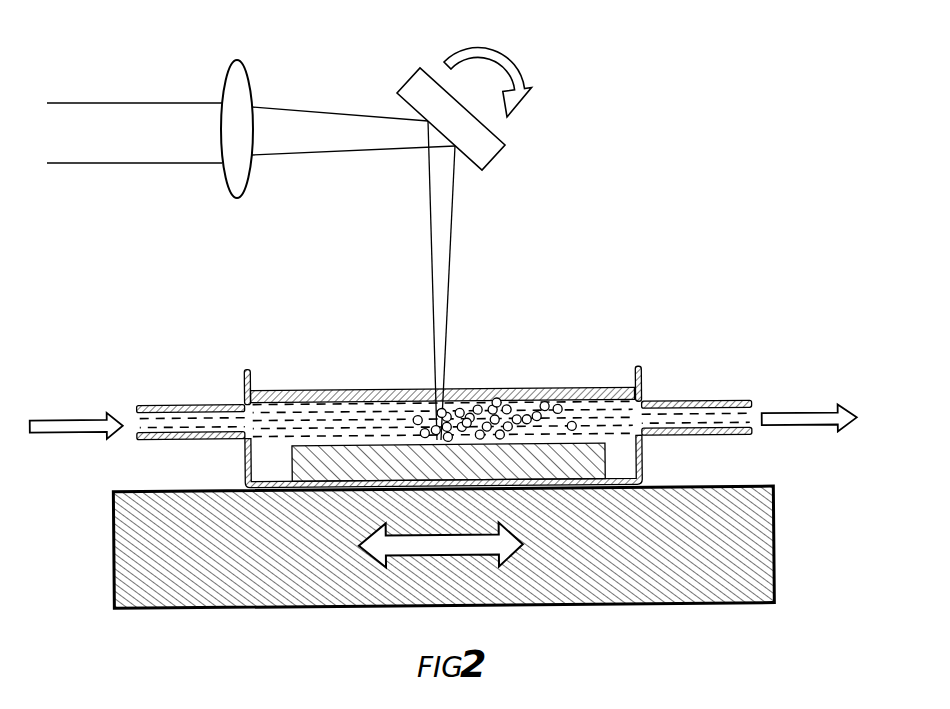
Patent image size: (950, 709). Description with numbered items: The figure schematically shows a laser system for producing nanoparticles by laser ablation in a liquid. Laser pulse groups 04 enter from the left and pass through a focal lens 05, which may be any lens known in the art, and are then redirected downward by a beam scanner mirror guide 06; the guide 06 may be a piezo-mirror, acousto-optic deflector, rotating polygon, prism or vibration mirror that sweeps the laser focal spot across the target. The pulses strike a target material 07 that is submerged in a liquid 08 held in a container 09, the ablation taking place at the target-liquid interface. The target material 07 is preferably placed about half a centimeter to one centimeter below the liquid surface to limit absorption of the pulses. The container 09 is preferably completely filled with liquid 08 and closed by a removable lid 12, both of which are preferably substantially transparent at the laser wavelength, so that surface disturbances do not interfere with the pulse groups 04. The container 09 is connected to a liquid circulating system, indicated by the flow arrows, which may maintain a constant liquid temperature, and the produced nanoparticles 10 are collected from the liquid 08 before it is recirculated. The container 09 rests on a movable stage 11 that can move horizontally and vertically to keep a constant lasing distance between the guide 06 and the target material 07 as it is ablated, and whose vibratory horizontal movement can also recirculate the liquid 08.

The laser pulse groups 04 is at (152, 102).
The focal lens 05 is at (236, 60).
The beam scanner mirror guide 06 is at (508, 149).
The target material 07 is at (332, 444).
The liquid 08 is at (597, 398).
The container 09 is at (644, 380).
The nanoparticles 10 is at (520, 410).
The movable stage 11 is at (113, 552).
The removable lid 12 is at (298, 389).